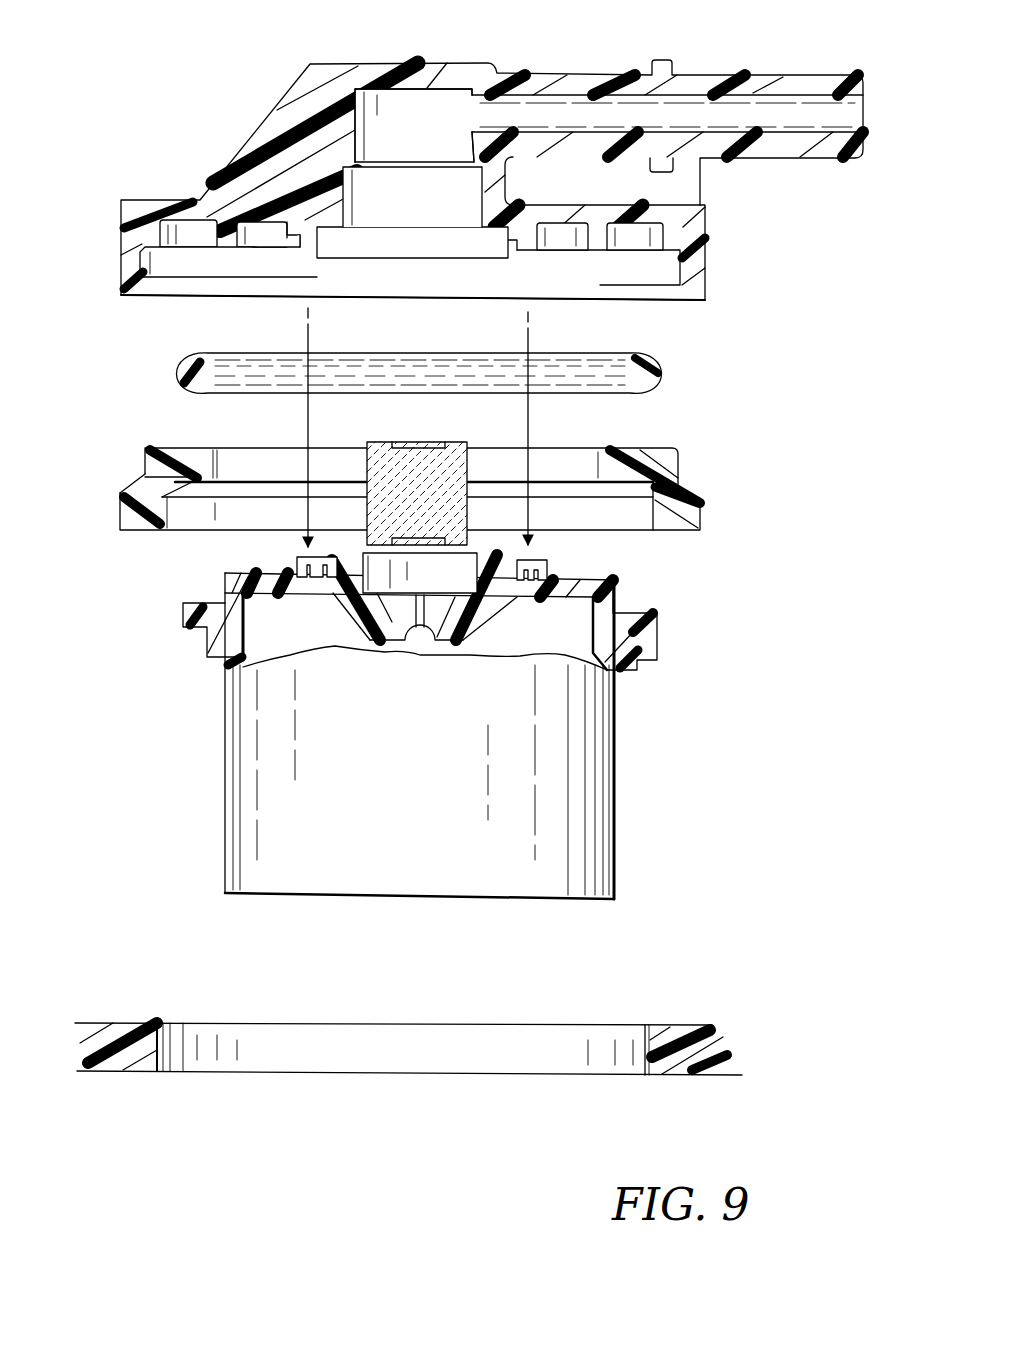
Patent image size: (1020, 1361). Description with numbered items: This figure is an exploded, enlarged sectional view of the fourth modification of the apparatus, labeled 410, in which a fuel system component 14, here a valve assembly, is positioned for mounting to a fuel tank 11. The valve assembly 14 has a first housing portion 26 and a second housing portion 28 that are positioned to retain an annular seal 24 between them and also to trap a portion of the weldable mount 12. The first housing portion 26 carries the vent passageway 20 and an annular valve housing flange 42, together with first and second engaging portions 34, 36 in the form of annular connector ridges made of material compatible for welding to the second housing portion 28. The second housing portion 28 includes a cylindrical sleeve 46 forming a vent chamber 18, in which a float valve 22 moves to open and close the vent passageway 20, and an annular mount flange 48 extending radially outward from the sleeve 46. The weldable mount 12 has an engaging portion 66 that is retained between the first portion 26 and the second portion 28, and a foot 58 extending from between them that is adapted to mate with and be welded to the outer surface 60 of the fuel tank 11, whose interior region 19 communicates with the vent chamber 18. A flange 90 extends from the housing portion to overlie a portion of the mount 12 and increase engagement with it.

The cap assembly 410 is at (134, 162).
The cap 14 is at (372, 60).
The base plate of cap 26 is at (115, 236).
The raised block 42 is at (128, 249).
The bottom edge wedge 90 is at (116, 298).
The hub 20 is at (357, 185).
The contact pads 34 is at (300, 244).
The gasket 24 is at (662, 367).
The spacer ring 12 is at (102, 483).
The hatched insert block 66 is at (182, 443).
The lower ring section 58 is at (118, 510).
The fixtures 36 is at (296, 563).
The flange 48 is at (199, 603).
The housing wall 28 is at (181, 617).
The center post 22 is at (413, 652).
The housing cup 18 is at (546, 636).
The cup side wall 46 is at (265, 834).
The bottom plate 19 is at (176, 1101).
The plate edge 11 is at (120, 1020).
The plate section 60 is at (148, 1022).